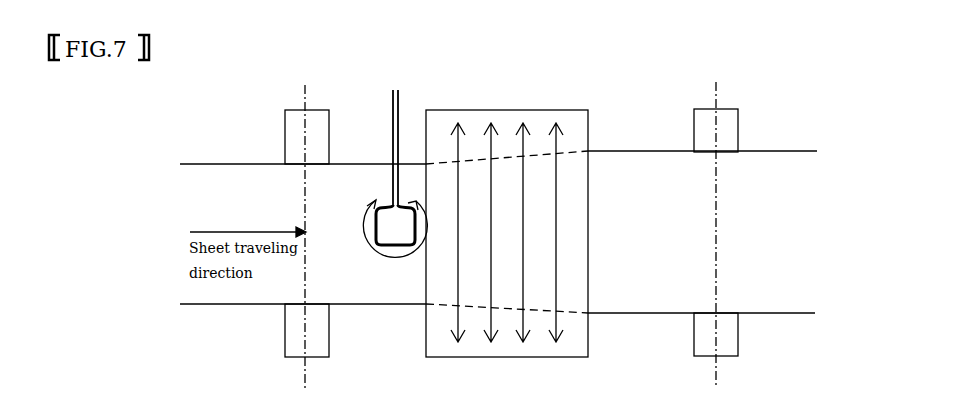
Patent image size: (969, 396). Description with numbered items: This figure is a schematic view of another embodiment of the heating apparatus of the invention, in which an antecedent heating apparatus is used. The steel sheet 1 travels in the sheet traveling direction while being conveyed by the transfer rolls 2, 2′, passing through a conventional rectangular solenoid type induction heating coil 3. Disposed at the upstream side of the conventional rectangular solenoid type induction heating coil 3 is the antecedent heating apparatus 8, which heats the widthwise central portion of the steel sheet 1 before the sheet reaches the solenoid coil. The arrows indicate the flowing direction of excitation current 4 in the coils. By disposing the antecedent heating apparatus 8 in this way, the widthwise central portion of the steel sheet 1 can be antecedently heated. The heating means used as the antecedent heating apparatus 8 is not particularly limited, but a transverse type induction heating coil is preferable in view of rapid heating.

The steel sheet 1 is at (218, 188).
The transfer roll 2 is at (292, 133).
The transfer roll 2′ is at (724, 133).
The conventional rectangular solenoid type induction heating coil 3 is at (497, 120).
The flowing direction of excitation current 4 is at (363, 240).
The antecedent heating apparatus 8 is at (392, 89).